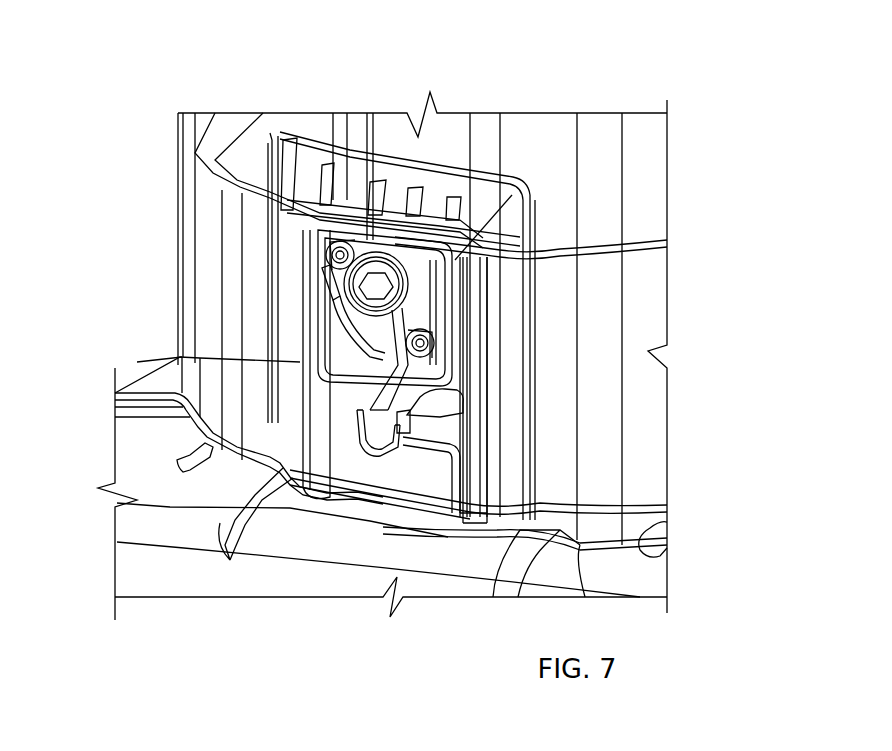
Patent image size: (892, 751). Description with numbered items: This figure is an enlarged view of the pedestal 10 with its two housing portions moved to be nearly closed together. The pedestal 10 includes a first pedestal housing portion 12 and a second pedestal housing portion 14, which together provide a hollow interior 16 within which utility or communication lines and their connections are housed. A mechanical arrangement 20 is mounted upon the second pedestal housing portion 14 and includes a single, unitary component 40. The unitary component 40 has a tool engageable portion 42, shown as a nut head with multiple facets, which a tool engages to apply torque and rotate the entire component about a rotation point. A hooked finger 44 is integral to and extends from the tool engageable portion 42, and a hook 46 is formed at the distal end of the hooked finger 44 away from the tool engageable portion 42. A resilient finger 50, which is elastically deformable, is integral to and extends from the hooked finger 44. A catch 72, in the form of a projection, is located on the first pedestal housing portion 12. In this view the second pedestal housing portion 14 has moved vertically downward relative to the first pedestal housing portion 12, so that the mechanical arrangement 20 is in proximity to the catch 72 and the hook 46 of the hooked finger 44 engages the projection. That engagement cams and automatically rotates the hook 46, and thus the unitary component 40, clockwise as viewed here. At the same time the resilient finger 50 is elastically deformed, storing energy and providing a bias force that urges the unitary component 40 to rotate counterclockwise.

The pedestal 10 is at (720, 193).
The first pedestal housing portion 12 is at (132, 523).
The second pedestal housing portion 14 is at (641, 131).
The hollow interior 16 is at (652, 164).
The mechanical arrangement 20 is at (396, 198).
The single, unitary component 40 is at (377, 487).
The tool engageable portion 42 is at (385, 288).
The hooked finger 44 is at (357, 423).
The hook 46 is at (406, 432).
The resilient finger 50 is at (347, 312).
The catch 72 is at (433, 438).